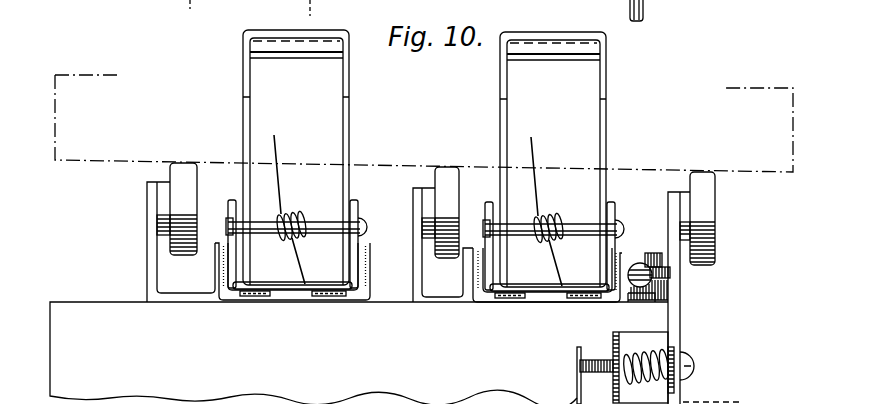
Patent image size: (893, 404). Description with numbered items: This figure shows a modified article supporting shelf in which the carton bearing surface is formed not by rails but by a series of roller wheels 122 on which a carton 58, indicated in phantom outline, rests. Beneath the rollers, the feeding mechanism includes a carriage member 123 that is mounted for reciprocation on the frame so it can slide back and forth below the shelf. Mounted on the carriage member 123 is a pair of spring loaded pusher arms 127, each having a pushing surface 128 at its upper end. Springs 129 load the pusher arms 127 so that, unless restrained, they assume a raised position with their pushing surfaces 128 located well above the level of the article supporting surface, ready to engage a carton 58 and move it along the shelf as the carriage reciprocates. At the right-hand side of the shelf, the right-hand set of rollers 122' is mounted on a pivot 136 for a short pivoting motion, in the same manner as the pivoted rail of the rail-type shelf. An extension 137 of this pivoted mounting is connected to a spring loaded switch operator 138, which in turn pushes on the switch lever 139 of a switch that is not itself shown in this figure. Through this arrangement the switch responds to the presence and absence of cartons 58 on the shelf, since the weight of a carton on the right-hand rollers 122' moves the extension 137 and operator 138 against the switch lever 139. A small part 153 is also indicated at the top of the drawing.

The carton 58 is at (793, 118).
The roller wheels 122 is at (286, 232).
The right-hand set of rollers 122' is at (723, 218).
The carriage member 123 is at (356, 205).
The spring loaded pusher arms 127 is at (250, 77).
The pushing surface 128 is at (314, 47).
The springs 129 is at (296, 214).
The pivot 136 is at (642, 262).
The extension 137 is at (681, 316).
The spring loaded switch operator 138 is at (600, 357).
The switch lever 139 is at (575, 353).
The clip 153 is at (645, 8).